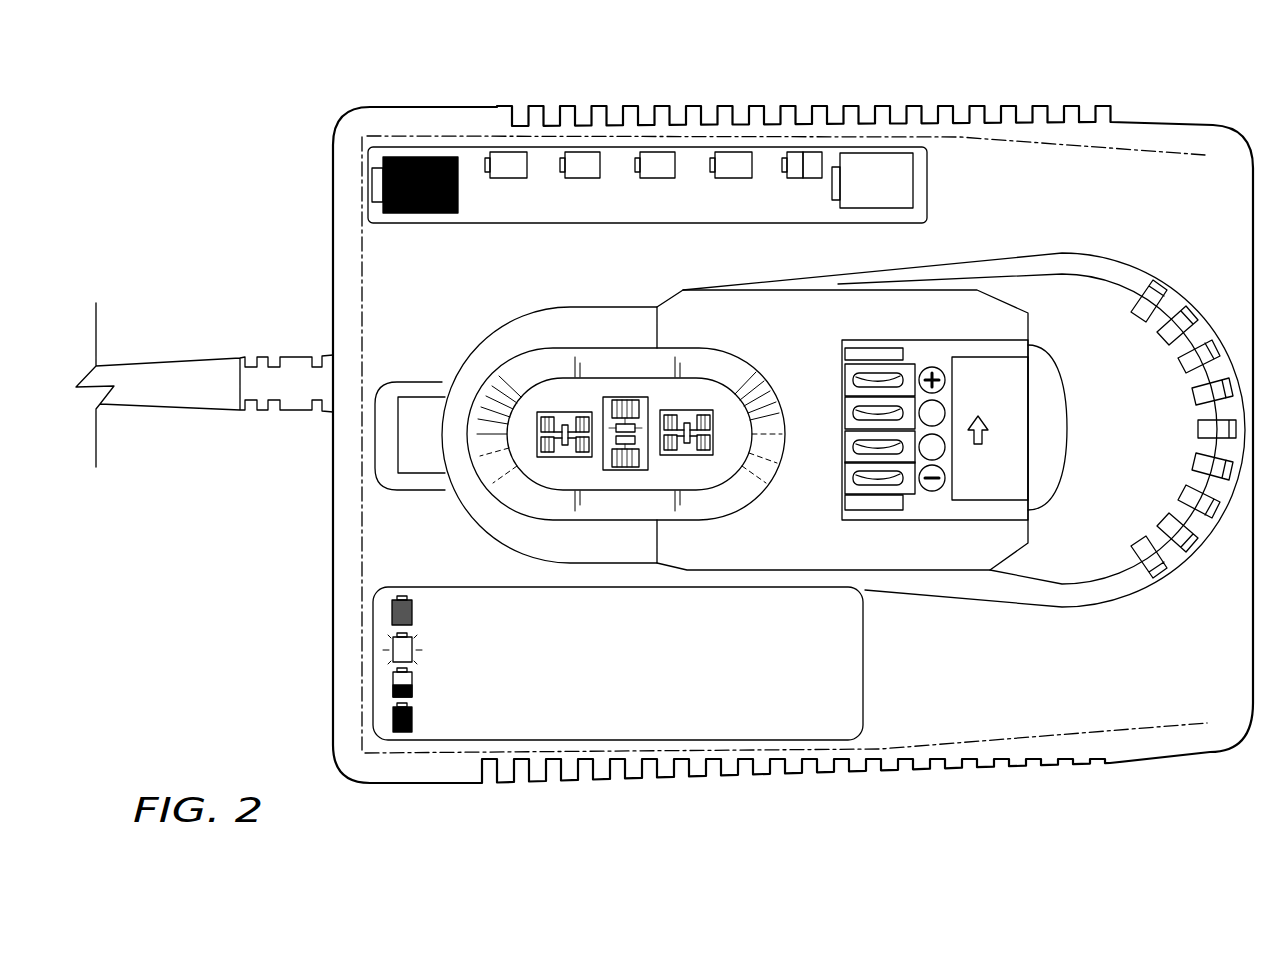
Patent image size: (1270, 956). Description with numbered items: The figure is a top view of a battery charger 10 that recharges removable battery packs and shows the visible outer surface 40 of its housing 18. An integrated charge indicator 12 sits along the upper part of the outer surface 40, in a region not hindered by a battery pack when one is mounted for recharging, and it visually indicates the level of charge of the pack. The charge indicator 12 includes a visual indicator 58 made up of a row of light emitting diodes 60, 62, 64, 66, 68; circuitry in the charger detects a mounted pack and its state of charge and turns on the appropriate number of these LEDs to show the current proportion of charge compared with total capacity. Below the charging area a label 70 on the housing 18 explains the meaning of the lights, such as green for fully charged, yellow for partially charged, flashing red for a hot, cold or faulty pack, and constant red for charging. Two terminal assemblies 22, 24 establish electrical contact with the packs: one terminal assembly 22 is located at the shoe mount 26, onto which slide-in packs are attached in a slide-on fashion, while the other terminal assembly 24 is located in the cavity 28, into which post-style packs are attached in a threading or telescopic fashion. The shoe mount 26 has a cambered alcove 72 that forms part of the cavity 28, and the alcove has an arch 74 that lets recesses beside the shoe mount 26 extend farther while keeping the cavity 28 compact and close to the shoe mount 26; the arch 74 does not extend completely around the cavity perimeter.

The battery charger 10 is at (357, 105).
The charge indicator 12 is at (683, 192).
The housing 18 is at (1148, 183).
The terminal assembly 22 is at (917, 380).
The terminal assembly 24 is at (563, 448).
The shoe mount 26 is at (987, 310).
The cavity 28 is at (527, 393).
The outer surface 40 is at (410, 262).
The visual indicator 58 is at (812, 165).
The light emitting diode 60 is at (797, 165).
The light emitting diode 62 is at (735, 165).
The light emitting diode 64 is at (655, 165).
The light emitting diode 66 is at (585, 165).
The light emitting diode 68 is at (510, 165).
The label 70 is at (443, 733).
The cambered alcove 72 is at (785, 465).
The arch 74 is at (713, 548).